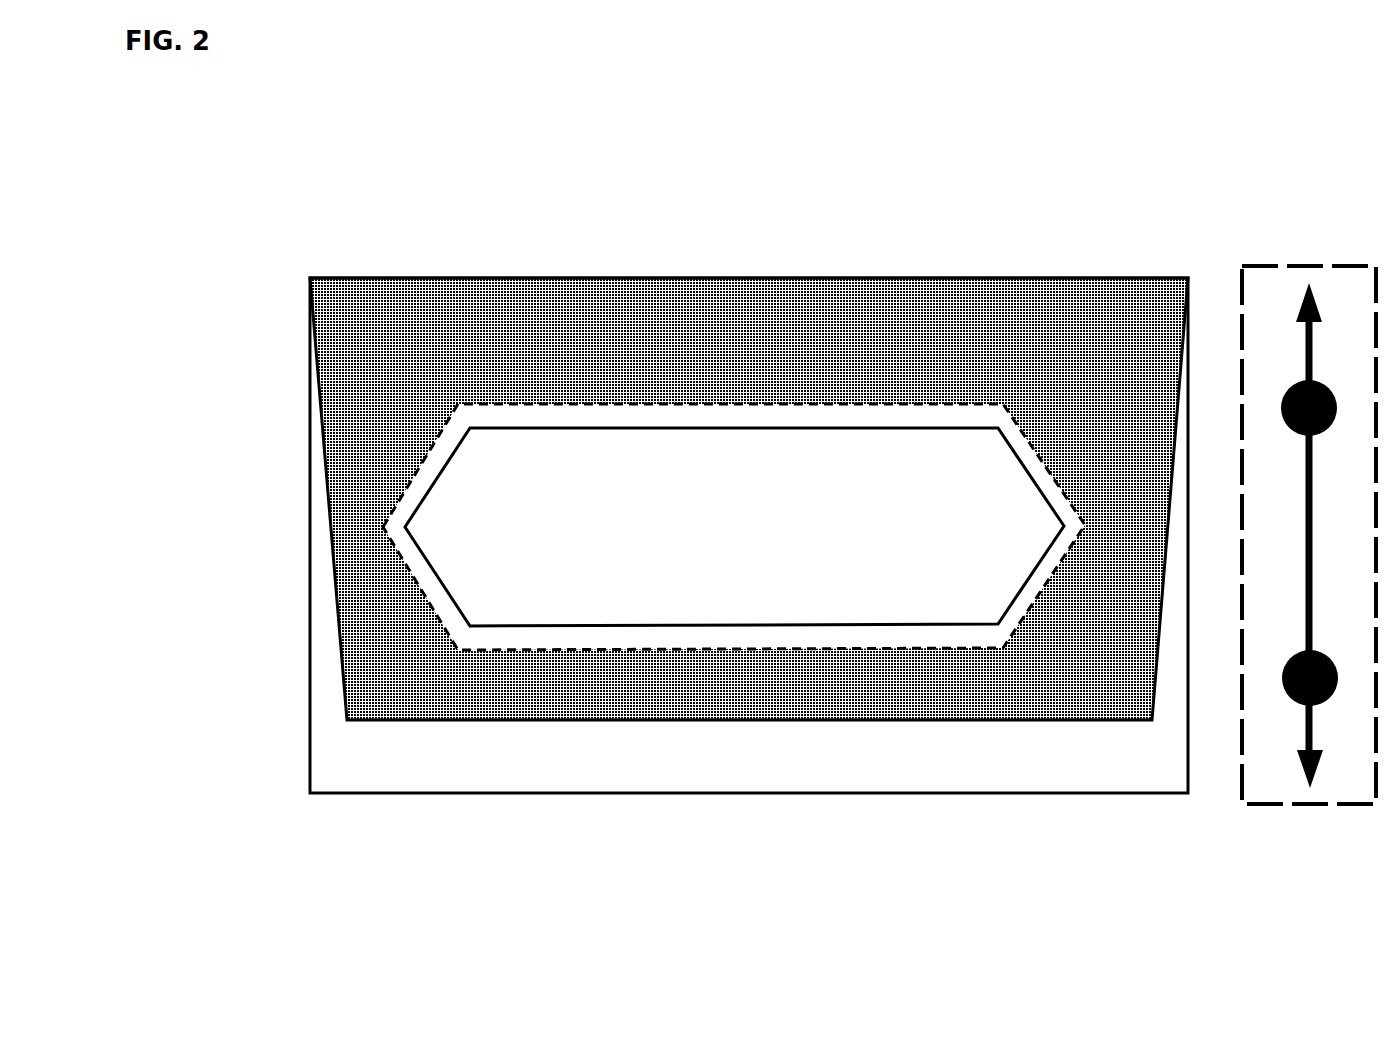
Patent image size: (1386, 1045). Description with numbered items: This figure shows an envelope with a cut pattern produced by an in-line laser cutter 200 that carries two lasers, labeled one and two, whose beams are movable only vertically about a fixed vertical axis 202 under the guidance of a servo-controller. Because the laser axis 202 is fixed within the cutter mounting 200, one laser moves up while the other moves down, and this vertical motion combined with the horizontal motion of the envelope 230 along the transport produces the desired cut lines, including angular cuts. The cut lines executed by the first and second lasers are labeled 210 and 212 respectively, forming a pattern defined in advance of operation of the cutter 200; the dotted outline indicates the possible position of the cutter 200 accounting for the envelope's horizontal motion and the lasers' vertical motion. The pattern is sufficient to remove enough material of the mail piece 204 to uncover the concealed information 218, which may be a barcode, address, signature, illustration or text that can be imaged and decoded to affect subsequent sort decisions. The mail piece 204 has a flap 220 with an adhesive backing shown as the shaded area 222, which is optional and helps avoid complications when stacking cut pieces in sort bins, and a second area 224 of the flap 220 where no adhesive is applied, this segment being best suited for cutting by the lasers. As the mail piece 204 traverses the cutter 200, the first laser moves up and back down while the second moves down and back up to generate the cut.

The in-line laser cutter 200 is at (1272, 265).
The vertical axis 202 is at (1305, 535).
The mail piece 204 is at (280, 832).
The cut line of first laser 210 is at (1027, 472).
The cut line of second laser 212 is at (1010, 601).
The information 218 is at (733, 532).
The flap 220 is at (762, 303).
The adhesive backing 222 is at (1028, 325).
The no adhesive area 224 is at (1064, 552).
The horizontal motion of the envelope 230 is at (297, 538).